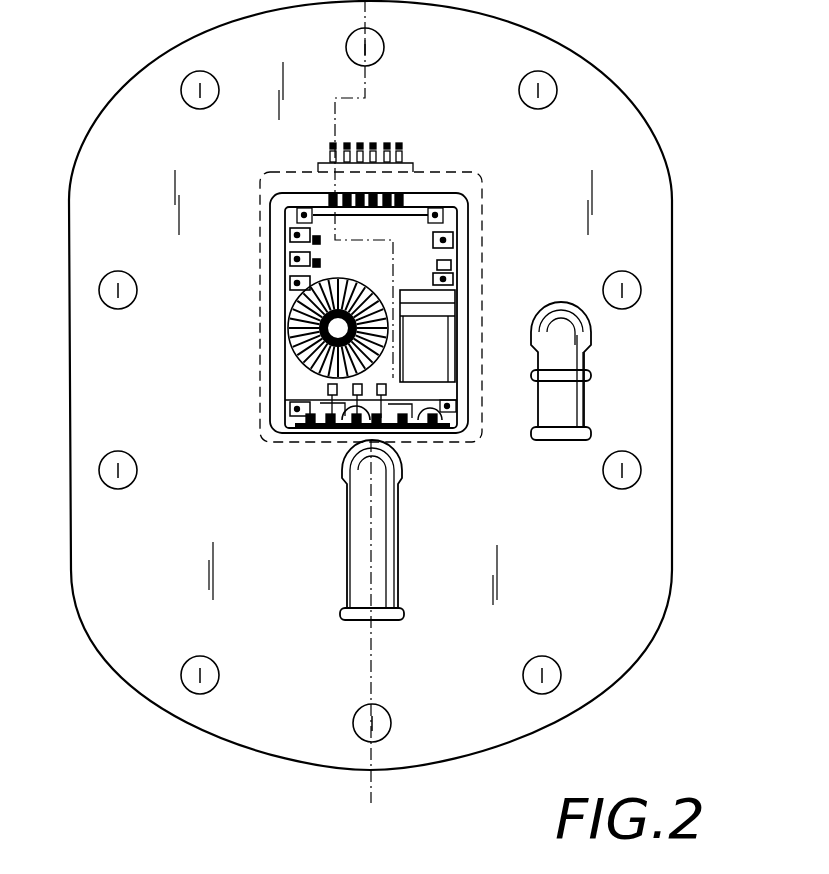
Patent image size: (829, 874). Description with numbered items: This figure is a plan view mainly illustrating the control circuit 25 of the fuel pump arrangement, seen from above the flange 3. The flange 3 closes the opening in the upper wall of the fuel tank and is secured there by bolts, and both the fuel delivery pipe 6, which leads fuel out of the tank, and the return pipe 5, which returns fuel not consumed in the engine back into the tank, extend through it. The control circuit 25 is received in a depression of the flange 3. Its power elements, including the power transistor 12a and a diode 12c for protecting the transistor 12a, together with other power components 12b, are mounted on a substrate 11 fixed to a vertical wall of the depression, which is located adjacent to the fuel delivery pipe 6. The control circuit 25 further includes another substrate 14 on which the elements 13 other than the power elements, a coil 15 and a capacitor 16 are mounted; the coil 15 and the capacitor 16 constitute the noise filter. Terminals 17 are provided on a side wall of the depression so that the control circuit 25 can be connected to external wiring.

The flange 3 is at (620, 90).
The return pipe 5 is at (490, 176).
The fuel delivery pipe 6 is at (397, 543).
The substrate 11 is at (422, 433).
The power transistor 12a is at (340, 423).
The electronic component 12b is at (303, 420).
The diode 12c is at (440, 430).
The elements other than the power elements 13 is at (300, 388).
The substrate 14 is at (323, 416).
The coil 15 is at (287, 295).
The capacitor 16 is at (435, 330).
The terminals 17 is at (405, 146).
The control circuit 25 is at (489, 224).